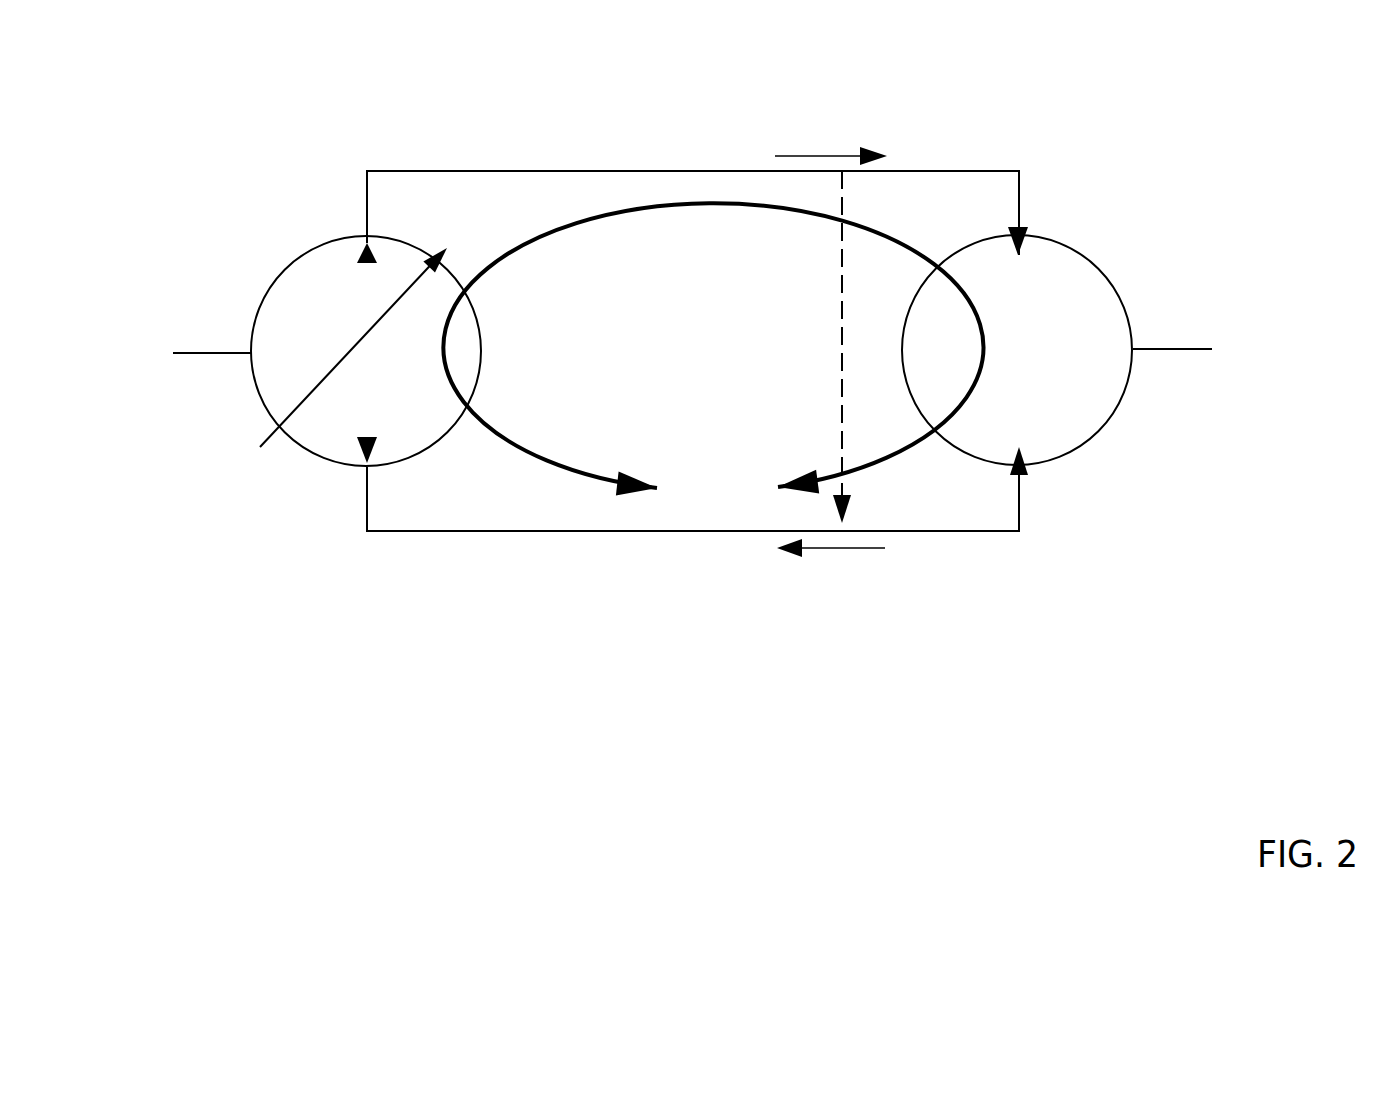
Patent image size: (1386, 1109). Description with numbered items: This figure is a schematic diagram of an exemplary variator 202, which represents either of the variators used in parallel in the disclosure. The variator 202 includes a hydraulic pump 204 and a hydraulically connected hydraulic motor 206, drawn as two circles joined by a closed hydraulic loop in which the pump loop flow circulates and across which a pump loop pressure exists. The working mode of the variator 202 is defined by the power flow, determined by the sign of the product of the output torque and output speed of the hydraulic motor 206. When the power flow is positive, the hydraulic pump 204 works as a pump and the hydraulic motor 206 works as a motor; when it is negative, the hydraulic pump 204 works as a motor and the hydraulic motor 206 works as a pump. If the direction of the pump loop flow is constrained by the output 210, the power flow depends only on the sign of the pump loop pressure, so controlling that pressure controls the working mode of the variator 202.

The variator 202 is at (709, 76).
The hydraulic pump 204 is at (303, 275).
The hydraulic motor 206 is at (1073, 283).
The output 210 is at (1221, 340).